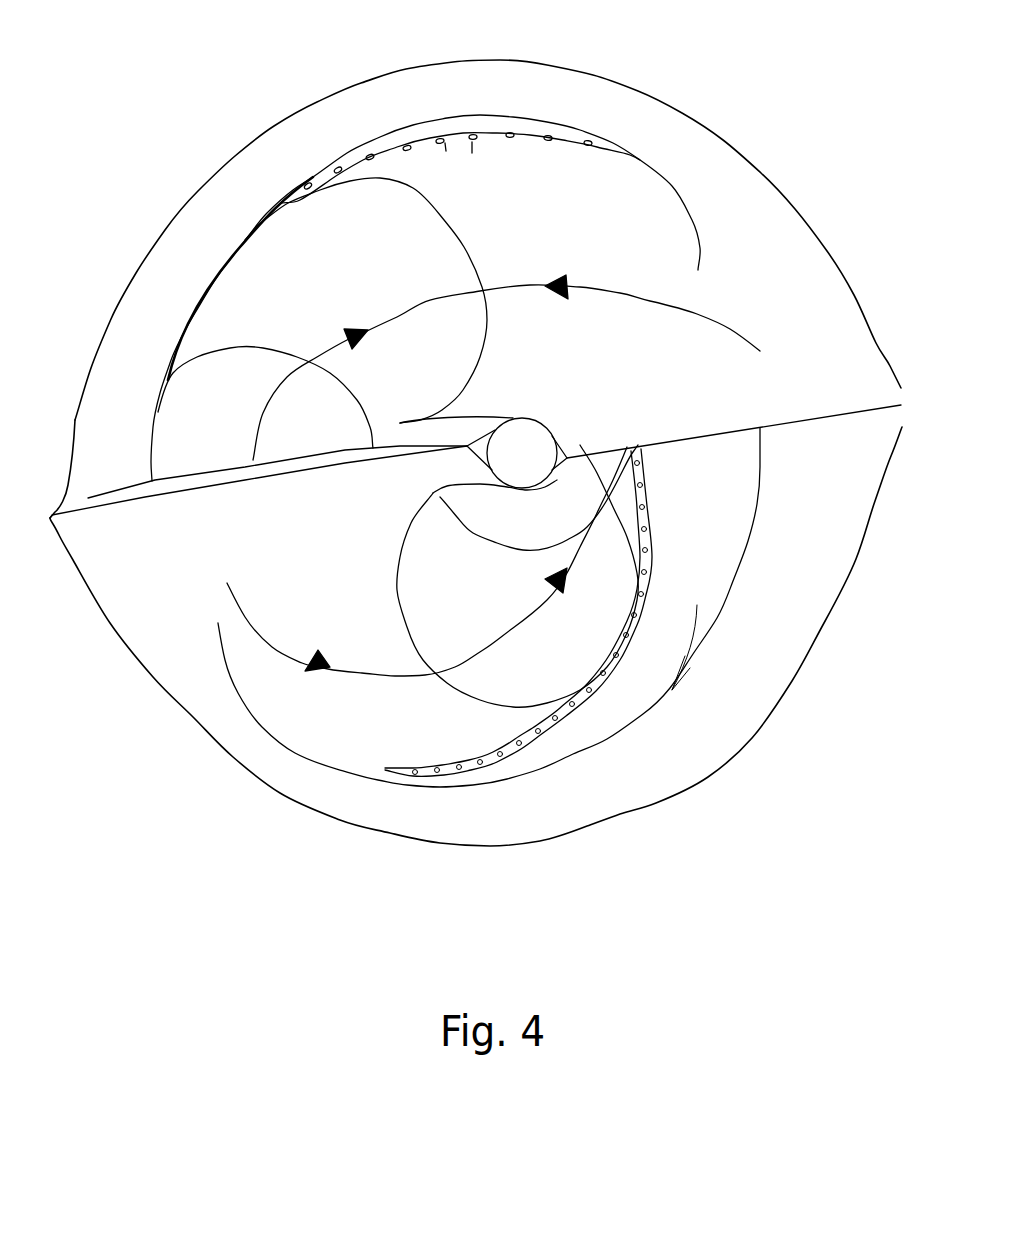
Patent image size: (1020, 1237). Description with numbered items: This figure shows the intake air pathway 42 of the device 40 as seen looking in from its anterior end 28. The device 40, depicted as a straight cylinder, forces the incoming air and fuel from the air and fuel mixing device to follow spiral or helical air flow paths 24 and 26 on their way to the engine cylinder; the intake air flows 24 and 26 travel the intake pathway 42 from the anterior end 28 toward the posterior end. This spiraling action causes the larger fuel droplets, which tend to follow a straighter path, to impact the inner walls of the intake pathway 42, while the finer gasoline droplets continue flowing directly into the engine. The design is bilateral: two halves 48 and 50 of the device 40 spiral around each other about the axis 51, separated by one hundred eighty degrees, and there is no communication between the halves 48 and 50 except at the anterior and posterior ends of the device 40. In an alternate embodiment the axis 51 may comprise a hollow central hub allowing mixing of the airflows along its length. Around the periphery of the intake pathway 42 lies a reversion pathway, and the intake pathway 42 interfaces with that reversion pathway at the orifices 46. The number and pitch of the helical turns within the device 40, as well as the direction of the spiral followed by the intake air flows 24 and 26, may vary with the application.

The intake air flow 24 is at (370, 672).
The intake air flow 26 is at (640, 293).
The anterior end 28 is at (803, 781).
The device 40 is at (183, 818).
The intake pathway 42 is at (82, 626).
The orifices 46 is at (407, 150).
The half of device 48 is at (366, 522).
The half of device 50 is at (817, 340).
The axis 51 is at (523, 447).